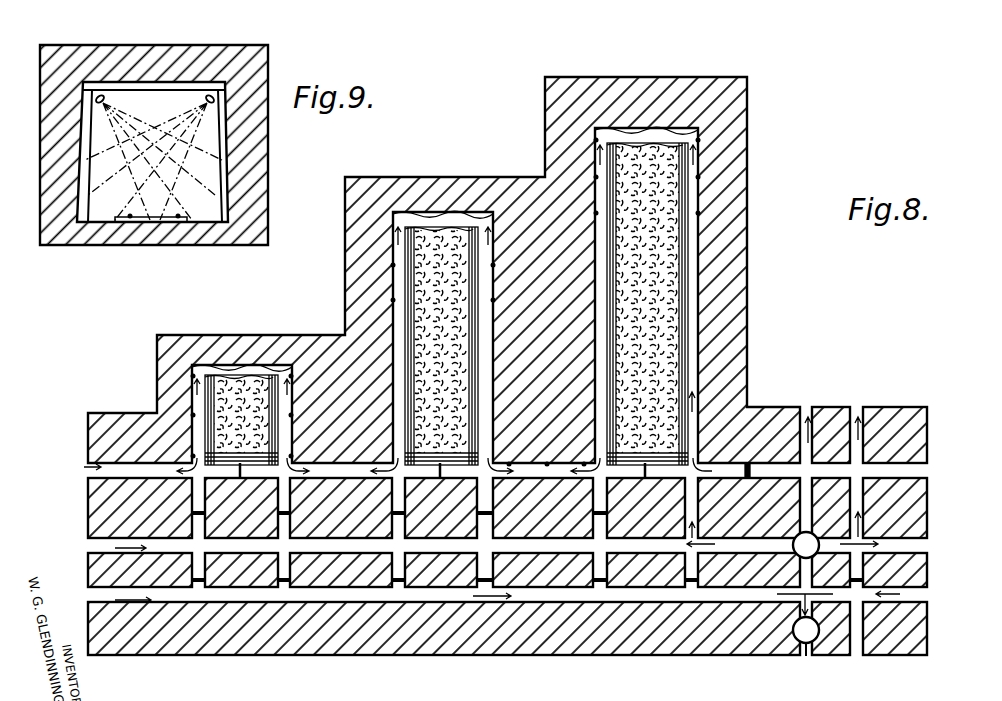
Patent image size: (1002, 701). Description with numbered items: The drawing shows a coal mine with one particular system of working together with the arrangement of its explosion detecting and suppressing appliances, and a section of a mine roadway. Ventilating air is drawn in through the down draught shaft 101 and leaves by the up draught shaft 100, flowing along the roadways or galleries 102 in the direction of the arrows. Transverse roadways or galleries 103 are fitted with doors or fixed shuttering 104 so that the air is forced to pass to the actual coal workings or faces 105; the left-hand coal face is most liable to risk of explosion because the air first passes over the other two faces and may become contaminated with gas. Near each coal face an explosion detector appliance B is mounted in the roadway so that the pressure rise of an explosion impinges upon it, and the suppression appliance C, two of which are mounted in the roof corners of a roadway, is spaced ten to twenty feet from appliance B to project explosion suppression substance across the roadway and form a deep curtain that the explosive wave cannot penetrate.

In FIG. 8, the ventilation up draught shaft 100 is at (808, 644).
In FIG. 8, the down draught shaft 101 is at (818, 536).
In FIG. 8, the roadways or galleries 102 is at (88, 469).
In FIG. 9, the roadways or galleries 102 is at (210, 175).
In FIG. 8, the transverse roadways or galleries 103 is at (376, 547).
In FIG. 8, the doors or fixed shuttering 104 is at (400, 522).
In FIG. 8, the coal workings or faces 105 is at (240, 362).
In FIG. 8, the explosion detector appliance B is at (193, 415).
In FIG. 8, the explosion suppression appliance C is at (193, 376).
In FIG. 9, the explosion suppression appliance C is at (208, 96).